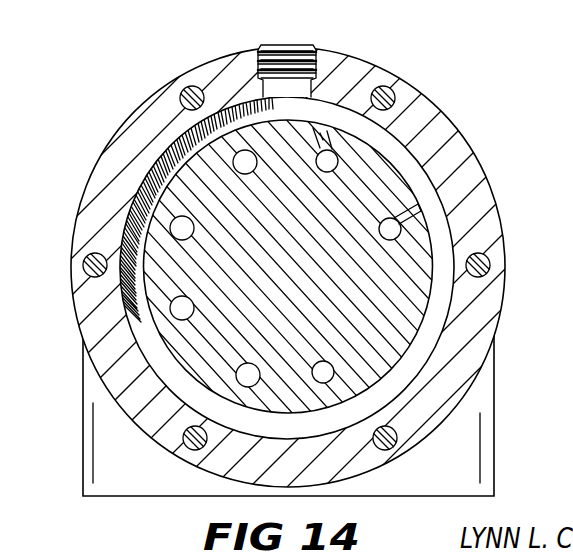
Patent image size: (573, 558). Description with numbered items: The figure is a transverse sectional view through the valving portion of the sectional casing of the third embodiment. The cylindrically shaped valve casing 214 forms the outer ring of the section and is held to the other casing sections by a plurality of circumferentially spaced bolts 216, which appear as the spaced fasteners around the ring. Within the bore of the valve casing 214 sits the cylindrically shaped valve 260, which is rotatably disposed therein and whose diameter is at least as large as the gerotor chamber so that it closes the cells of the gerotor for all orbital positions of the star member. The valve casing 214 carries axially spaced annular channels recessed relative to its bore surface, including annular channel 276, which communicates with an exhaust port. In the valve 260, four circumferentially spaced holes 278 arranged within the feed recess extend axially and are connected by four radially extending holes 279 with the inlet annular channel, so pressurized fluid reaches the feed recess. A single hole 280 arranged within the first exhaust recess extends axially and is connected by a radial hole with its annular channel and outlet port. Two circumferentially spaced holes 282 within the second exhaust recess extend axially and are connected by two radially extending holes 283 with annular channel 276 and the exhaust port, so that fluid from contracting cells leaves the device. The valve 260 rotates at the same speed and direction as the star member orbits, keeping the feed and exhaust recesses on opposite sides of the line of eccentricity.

The valving section 214 is at (488, 217).
The bolts 216 is at (396, 96).
The valve 260 is at (350, 306).
The annular channel 276 is at (380, 393).
The holes 278 is at (236, 168).
The holes 279 is at (300, 52).
The hole 280 is at (355, 353).
The holes 282 is at (319, 168).
The holes 283 is at (330, 152).